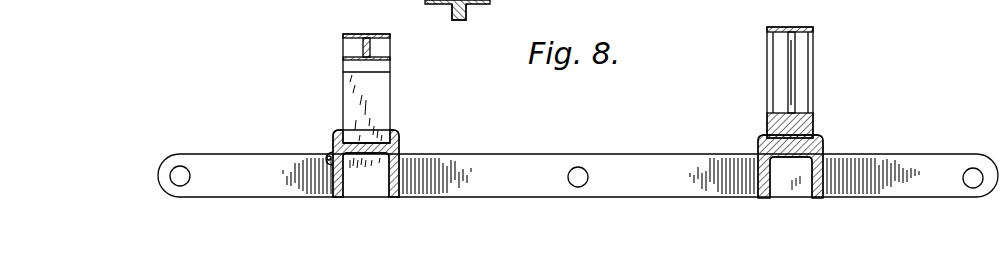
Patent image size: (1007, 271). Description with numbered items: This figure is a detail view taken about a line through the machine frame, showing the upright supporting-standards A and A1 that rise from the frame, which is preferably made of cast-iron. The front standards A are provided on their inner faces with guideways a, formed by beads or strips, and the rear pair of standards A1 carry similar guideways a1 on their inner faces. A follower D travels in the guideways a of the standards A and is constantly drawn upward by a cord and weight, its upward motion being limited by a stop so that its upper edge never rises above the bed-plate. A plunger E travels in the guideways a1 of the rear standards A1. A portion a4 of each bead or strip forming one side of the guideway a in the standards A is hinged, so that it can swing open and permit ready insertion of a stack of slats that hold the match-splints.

The upright supporting-standard A is at (578, 175).
The rear upright supporting-standard A1 is at (788, 178).
The guideway a is at (399, 143).
The guideway a1 is at (758, 147).
The hinged portion of bead or strip a4 is at (331, 156).
The follower D is at (355, 101).
The plunger E is at (813, 77).